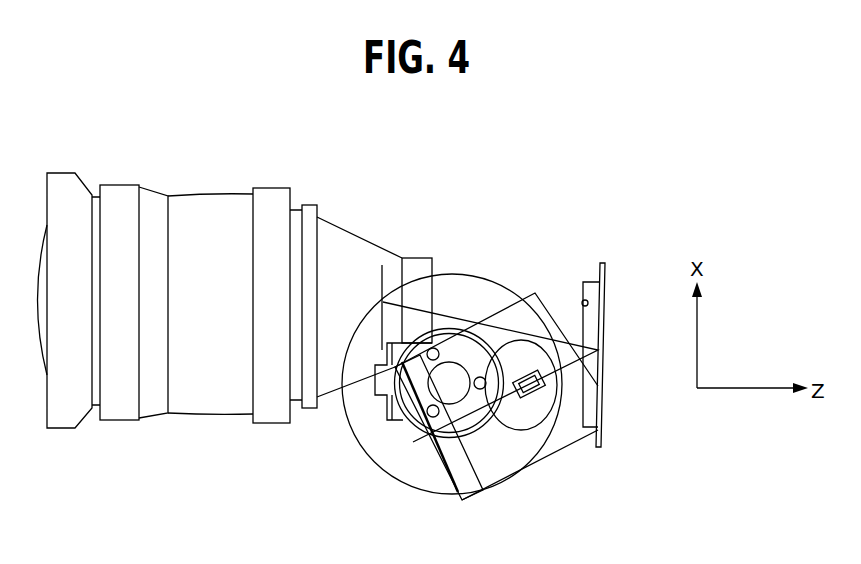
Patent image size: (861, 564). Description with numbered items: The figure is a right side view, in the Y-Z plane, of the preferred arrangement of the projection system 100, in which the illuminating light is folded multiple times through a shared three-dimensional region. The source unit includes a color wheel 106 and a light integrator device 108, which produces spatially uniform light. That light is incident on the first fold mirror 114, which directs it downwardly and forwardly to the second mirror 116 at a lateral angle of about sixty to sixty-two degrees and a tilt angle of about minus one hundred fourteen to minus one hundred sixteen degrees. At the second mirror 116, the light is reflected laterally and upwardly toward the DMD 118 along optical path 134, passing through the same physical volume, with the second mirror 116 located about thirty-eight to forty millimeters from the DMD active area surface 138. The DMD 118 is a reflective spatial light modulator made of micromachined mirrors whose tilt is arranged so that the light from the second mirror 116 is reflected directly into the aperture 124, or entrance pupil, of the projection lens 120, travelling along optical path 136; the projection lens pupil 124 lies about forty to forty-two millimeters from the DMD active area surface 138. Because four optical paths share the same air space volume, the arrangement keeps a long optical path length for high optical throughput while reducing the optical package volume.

The projection system 100 is at (531, 146).
The color wheel 106 is at (453, 277).
The light integrator device 108 is at (506, 338).
The first fold mirror 114 is at (548, 443).
The second mirror 116 is at (437, 462).
The DMD 118 is at (602, 263).
The projection lens 120 is at (160, 186).
The aperture 124 is at (437, 256).
The optical path 134 is at (603, 360).
The optical path 136 is at (568, 345).
The DMD active area surface 138 is at (582, 302).